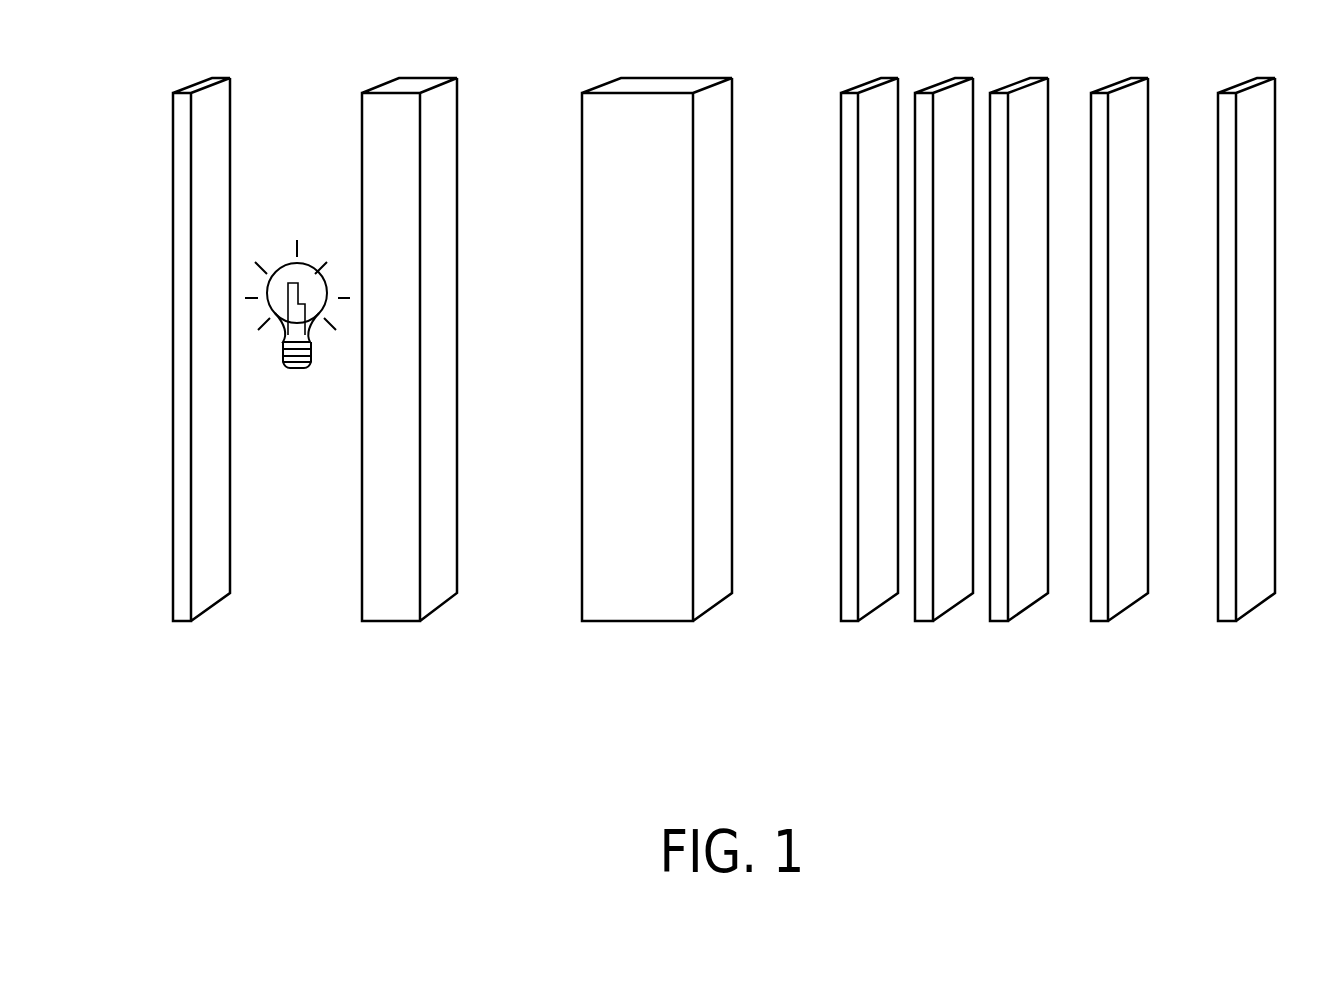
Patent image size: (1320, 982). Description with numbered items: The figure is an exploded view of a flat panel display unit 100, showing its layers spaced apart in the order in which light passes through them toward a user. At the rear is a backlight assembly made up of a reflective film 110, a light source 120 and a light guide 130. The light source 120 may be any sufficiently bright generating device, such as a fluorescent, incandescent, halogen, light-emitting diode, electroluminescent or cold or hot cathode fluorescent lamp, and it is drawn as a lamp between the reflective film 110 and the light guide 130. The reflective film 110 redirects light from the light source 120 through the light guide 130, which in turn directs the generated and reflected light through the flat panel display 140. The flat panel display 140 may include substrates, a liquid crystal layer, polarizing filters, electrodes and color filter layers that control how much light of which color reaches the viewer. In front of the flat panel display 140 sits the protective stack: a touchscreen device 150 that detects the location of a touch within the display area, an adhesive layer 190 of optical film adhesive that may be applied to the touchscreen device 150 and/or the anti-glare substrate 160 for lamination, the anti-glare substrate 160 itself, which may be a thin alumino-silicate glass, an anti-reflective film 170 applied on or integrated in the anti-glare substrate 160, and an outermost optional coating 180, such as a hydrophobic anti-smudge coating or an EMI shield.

The display system 100 is at (503, 47).
The reflective film 110 is at (210, 607).
The light source 120 is at (297, 369).
The light guide 130 is at (437, 608).
The flat panel display 140 is at (636, 621).
The touchscreen device 150 is at (878, 608).
The adhesive layer 190 is at (953, 608).
The anti-glare substrate 160 is at (1028, 608).
The anti-reflective film 170 is at (1128, 608).
The optional coating 180 is at (1253, 608).